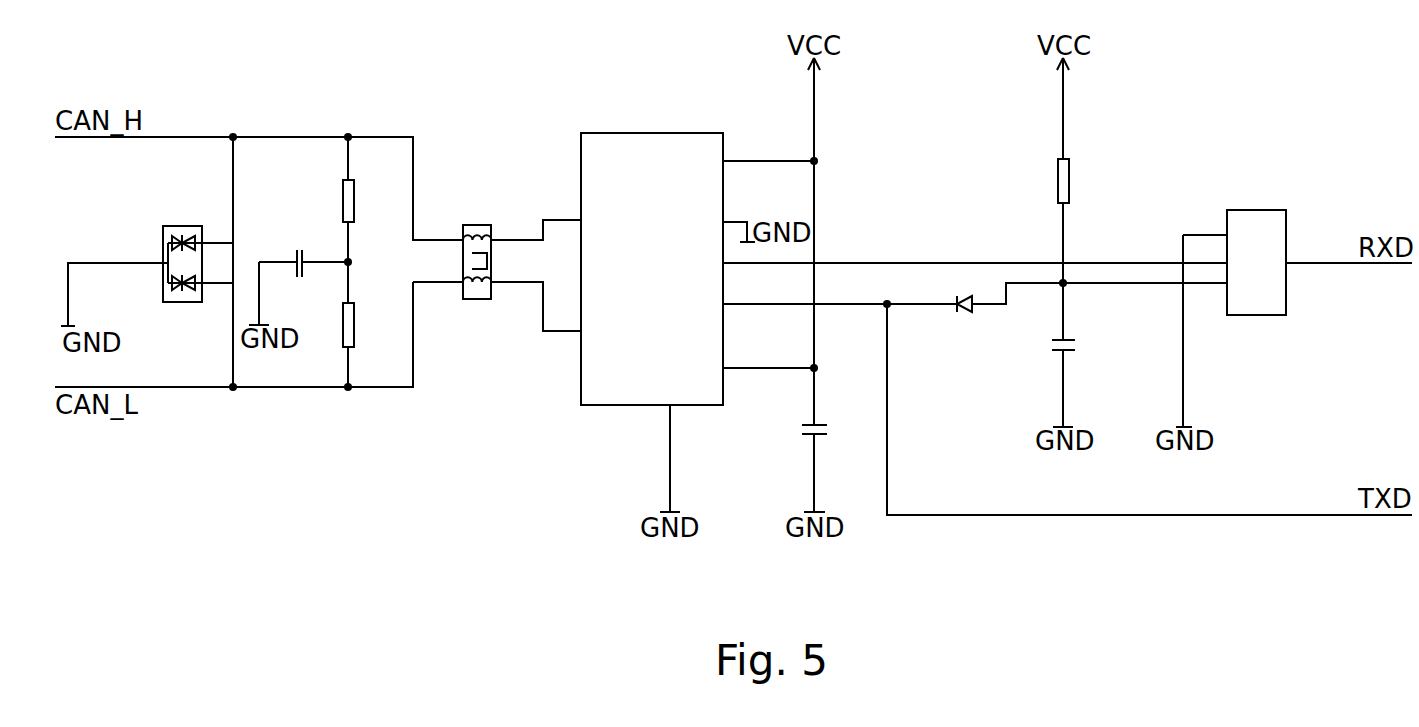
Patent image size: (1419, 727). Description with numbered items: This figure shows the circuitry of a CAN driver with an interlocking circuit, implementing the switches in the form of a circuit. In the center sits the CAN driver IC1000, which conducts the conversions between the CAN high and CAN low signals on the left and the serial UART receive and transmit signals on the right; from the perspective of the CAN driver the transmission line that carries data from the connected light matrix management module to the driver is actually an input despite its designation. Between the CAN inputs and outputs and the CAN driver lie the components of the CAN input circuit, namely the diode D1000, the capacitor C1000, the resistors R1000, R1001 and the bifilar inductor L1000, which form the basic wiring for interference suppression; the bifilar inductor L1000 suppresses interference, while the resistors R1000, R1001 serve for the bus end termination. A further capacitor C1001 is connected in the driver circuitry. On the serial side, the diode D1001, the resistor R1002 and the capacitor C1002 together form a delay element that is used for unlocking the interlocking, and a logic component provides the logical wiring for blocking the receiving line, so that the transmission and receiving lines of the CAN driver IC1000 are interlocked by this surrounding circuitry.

The CAN input circuit diode D1000 is at (155, 266).
The CAN input circuit capacitor C1000 is at (302, 260).
The bus end termination resistor R1000 is at (346, 193).
The bus end termination resistor R1001 is at (346, 336).
The bifilar inductor L1000 is at (480, 261).
The CAN driver IC1000 is at (653, 265).
The capacitor C1001 is at (1036, 313).
The delay circuit diode D1001 is at (967, 324).
The delay circuit resistor R1002 is at (1046, 183).
The delay circuit capacitor C1002 is at (1048, 345).